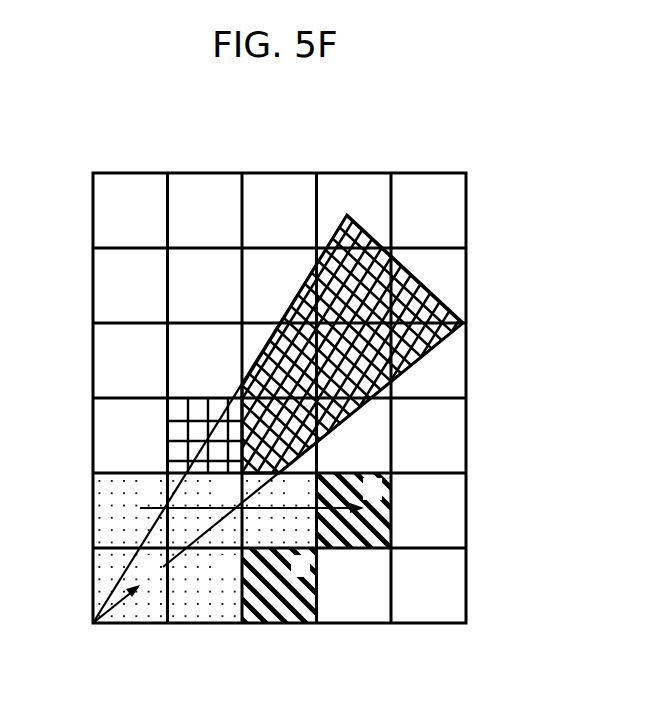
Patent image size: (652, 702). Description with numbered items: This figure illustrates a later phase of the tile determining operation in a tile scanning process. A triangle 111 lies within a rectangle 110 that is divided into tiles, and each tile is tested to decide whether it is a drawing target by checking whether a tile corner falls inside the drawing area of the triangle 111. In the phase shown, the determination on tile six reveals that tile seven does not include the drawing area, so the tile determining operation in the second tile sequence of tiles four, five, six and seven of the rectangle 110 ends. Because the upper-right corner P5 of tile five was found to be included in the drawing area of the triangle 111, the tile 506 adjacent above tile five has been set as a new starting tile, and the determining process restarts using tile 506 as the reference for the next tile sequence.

The rectangle 110 is at (532, 230).
The triangle 111 is at (447, 296).
The tile 506 is at (166, 433).
The upper-right corner of tile 5 P5 is at (252, 464).